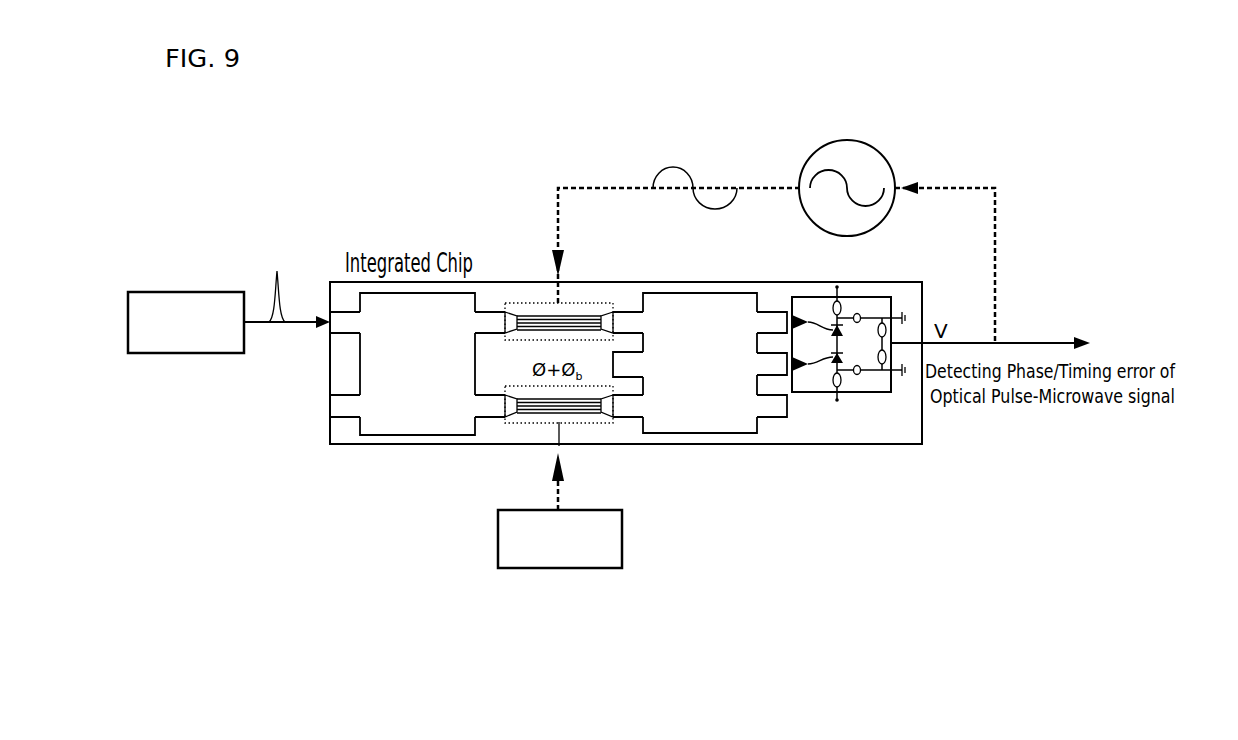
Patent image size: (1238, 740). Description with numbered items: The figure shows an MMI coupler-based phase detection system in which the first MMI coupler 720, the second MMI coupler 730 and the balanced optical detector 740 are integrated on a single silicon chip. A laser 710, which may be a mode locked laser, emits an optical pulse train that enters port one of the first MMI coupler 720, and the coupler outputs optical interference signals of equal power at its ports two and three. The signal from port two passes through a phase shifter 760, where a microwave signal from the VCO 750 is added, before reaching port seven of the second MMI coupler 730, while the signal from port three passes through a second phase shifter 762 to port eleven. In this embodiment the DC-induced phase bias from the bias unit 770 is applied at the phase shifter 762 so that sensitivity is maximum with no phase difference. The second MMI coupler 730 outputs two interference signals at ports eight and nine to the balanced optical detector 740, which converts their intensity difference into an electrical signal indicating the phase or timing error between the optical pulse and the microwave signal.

The laser 710 is at (190, 355).
The first MMI coupler 720 is at (408, 447).
The second MMI coupler 730 is at (708, 436).
The balanced optical detector 740 is at (862, 394).
The VCO 750 is at (847, 140).
The phase shifter 760 is at (600, 303).
The phase shifter 762 is at (590, 423).
The bias unit 770 is at (558, 570).